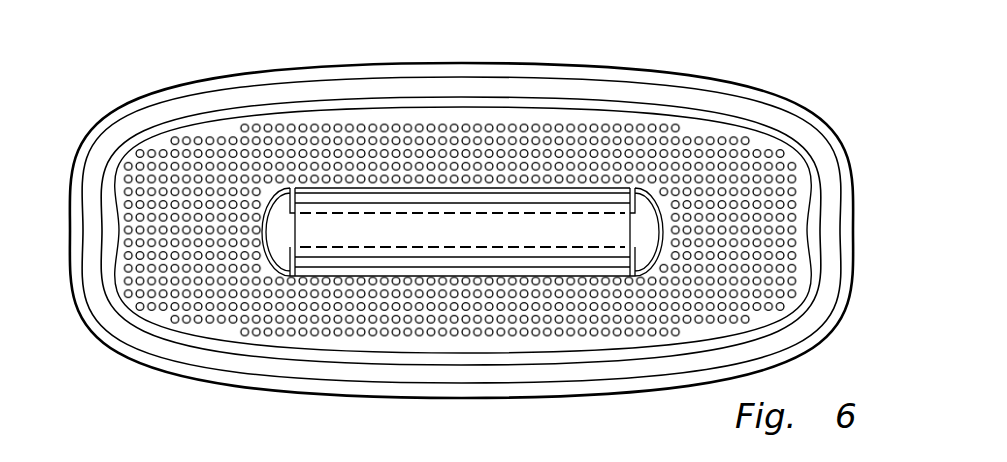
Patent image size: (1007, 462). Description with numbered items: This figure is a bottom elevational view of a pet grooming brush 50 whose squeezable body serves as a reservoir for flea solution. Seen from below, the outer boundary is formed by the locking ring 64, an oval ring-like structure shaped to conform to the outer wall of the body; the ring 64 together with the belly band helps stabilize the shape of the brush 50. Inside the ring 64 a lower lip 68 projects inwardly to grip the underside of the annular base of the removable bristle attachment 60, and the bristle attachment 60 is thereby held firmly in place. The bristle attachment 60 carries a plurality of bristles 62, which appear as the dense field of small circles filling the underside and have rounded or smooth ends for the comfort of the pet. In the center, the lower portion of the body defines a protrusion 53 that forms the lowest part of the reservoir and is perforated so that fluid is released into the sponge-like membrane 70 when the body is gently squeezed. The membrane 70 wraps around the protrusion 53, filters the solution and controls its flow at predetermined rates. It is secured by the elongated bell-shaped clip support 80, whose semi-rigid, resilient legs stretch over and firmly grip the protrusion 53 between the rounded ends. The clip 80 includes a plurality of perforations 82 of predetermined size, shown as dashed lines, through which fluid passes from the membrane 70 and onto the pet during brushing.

The brush 50 is at (172, 388).
The protrusion 53 is at (290, 190).
The bristle attachment 60 is at (817, 132).
The bristles 62 is at (797, 148).
The locking ring 64 is at (847, 228).
The lower lip 68 is at (823, 177).
The membrane 70 is at (577, 200).
The clip support 80 is at (520, 190).
The perforations 82 is at (340, 213).